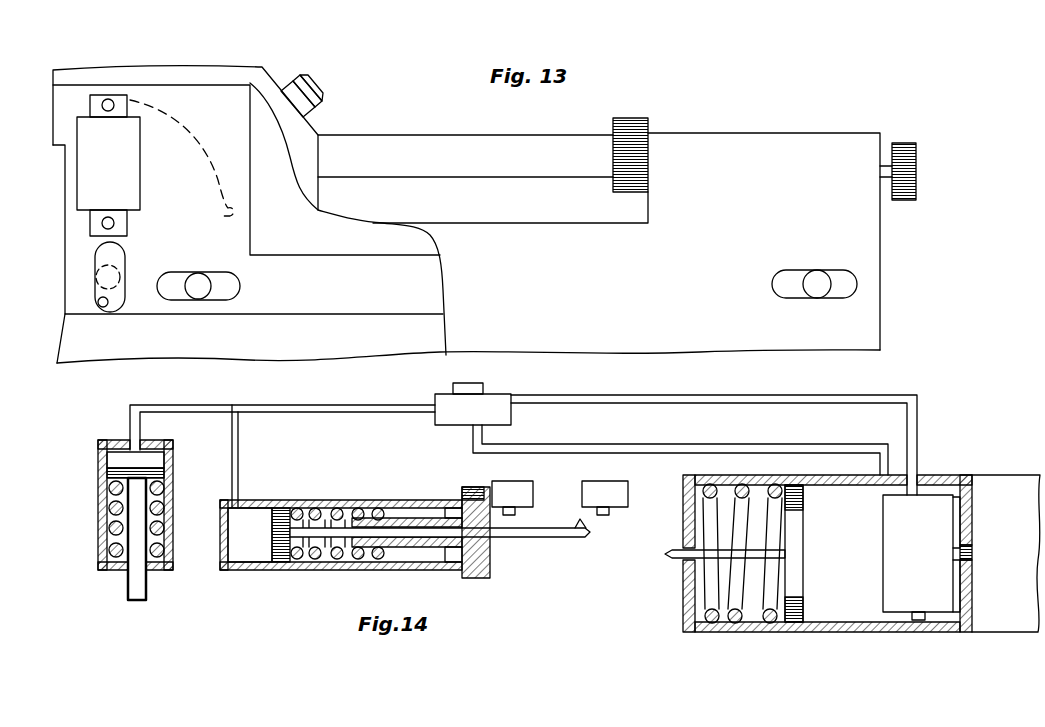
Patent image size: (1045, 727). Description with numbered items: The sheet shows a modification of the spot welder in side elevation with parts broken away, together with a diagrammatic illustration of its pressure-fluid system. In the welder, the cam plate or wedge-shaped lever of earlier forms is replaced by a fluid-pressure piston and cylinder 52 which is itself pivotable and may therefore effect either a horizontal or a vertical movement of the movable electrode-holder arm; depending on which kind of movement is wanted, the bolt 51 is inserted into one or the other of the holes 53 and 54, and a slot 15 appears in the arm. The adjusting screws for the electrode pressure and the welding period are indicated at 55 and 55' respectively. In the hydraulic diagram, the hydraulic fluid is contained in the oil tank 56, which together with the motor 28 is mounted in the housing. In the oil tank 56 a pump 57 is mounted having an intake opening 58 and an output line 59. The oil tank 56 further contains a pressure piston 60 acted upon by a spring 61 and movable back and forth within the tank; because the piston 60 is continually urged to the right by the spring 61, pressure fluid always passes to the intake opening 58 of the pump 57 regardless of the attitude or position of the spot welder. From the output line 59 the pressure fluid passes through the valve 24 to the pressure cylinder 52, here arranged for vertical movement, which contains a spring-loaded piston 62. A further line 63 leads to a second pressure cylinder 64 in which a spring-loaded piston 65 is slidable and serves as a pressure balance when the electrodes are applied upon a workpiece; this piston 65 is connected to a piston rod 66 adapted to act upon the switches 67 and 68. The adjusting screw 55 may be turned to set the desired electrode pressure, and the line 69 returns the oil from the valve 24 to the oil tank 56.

In FIG. 13, the slot 15 is at (830, 284).
In FIG. 13, the valve 24 is at (308, 88).
In FIG. 14, the valve 24 is at (512, 397).
In FIG. 14, the motor 28 is at (1020, 485).
In FIG. 13, the bolt 51 is at (100, 278).
In FIG. 13, the fluid-pressure piston and cylinder 52 is at (90, 130).
In FIG. 14, the fluid-pressure piston and cylinder 52 is at (107, 527).
In FIG. 13, the hole 53 is at (102, 297).
In FIG. 13, the hole 54 is at (203, 297).
In FIG. 13, the adjusting screw 55 is at (660, 143).
In FIG. 14, the adjusting screw 55 is at (476, 564).
In FIG. 13, the adjusting screw 55' is at (931, 171).
In FIG. 14, the oil tank 56 is at (850, 615).
In FIG. 14, the pump 57 is at (940, 503).
In FIG. 14, the intake opening 58 is at (917, 628).
In FIG. 14, the output line 59 is at (920, 437).
In FIG. 14, the pressure piston 60 is at (793, 622).
In FIG. 14, the spring 61 is at (731, 622).
In FIG. 14, the spring-loaded piston 62 is at (107, 477).
In FIG. 14, the line 63 is at (238, 461).
In FIG. 14, the second pressure cylinder 64 is at (247, 572).
In FIG. 14, the spring-loaded piston 65 is at (284, 572).
In FIG. 14, the piston rod 66 is at (549, 542).
In FIG. 14, the switch 67 is at (533, 496).
In FIG. 14, the switch 68 is at (628, 498).
In FIG. 14, the line 69 is at (712, 453).